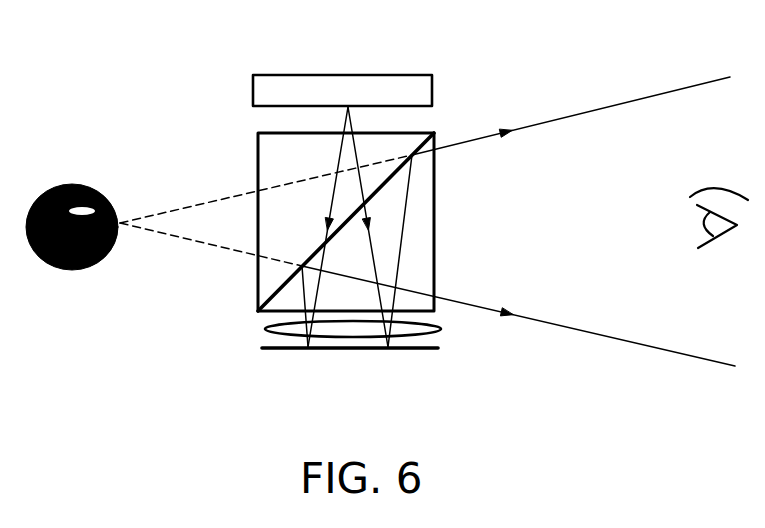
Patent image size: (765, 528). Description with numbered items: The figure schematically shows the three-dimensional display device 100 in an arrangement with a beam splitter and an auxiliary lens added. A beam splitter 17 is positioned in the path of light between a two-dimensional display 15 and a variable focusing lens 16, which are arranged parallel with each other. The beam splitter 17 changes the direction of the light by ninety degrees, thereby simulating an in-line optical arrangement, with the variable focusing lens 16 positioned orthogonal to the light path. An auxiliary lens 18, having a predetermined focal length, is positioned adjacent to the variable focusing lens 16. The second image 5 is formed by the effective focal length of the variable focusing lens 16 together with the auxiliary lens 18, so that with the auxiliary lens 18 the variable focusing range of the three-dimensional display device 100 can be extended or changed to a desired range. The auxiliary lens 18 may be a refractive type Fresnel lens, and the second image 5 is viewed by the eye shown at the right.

The three-dimensional display device 100 is at (154, 108).
The second image 5 is at (60, 278).
The 2D display 15 is at (422, 72).
The variable focusing lens 16 is at (425, 353).
The beam splitter 17 is at (438, 218).
The auxiliary lens 18 is at (263, 331).